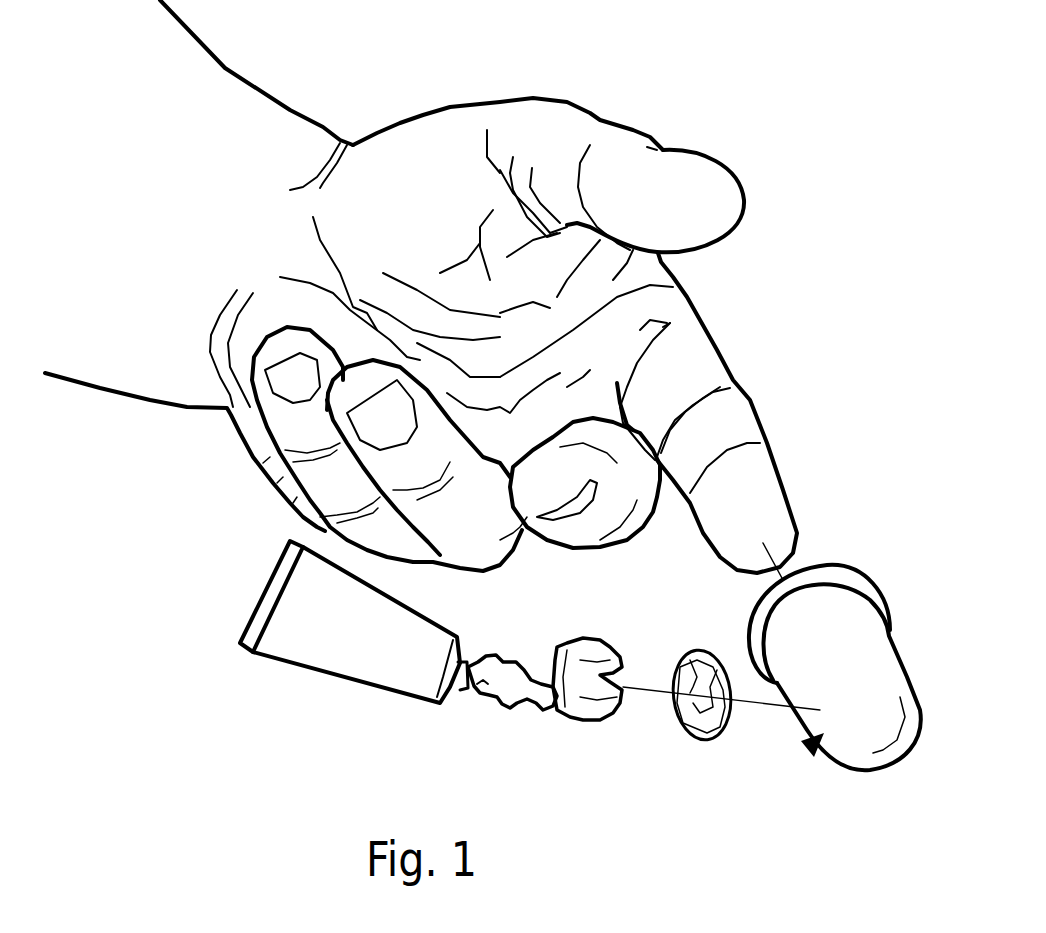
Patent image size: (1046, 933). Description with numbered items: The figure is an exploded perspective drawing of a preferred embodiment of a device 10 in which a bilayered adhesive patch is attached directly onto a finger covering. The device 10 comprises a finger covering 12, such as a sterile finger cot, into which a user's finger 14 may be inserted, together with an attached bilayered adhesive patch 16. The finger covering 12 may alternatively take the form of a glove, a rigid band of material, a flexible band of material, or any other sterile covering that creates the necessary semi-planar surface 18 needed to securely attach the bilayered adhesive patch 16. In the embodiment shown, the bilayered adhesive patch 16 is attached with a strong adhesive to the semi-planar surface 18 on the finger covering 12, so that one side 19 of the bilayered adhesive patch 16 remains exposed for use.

The device 10 is at (677, 830).
The finger covering 12 is at (900, 657).
The user's finger 14 is at (703, 363).
The bilayered adhesive patch 16 is at (670, 659).
The semi-planar surface 18 is at (803, 743).
The side of the bilayered adhesive patch 19 is at (697, 727).